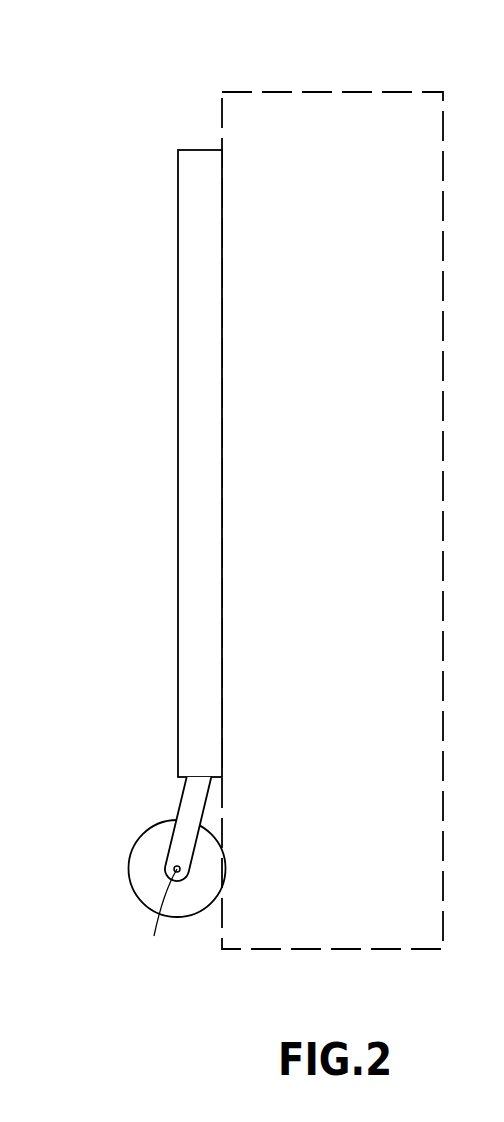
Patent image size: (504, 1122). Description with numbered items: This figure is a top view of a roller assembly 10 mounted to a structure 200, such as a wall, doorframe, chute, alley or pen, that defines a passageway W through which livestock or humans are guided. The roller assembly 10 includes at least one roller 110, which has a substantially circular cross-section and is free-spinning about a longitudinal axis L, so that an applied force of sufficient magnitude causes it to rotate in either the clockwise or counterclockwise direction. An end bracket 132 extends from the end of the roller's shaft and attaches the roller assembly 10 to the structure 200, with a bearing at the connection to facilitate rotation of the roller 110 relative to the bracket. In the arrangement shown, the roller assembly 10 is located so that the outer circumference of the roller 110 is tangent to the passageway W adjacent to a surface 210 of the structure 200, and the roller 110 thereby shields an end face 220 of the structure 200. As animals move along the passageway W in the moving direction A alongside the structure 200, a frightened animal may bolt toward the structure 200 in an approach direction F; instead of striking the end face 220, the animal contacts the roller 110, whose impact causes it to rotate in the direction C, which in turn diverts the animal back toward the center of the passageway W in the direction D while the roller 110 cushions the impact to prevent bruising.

The roller assembly 10 is at (153, 868).
The roller 110 is at (142, 896).
The end bracket 132 is at (182, 803).
The structure 200 is at (195, 477).
The surface 210 is at (222, 510).
The end face 220 is at (220, 779).
The passageway W is at (375, 93).
The moving direction A is at (375, 688).
The direction of roller rotation C is at (113, 882).
The diverting direction D is at (230, 860).
The approach direction F is at (240, 899).
The longitudinal axis L is at (164, 917).